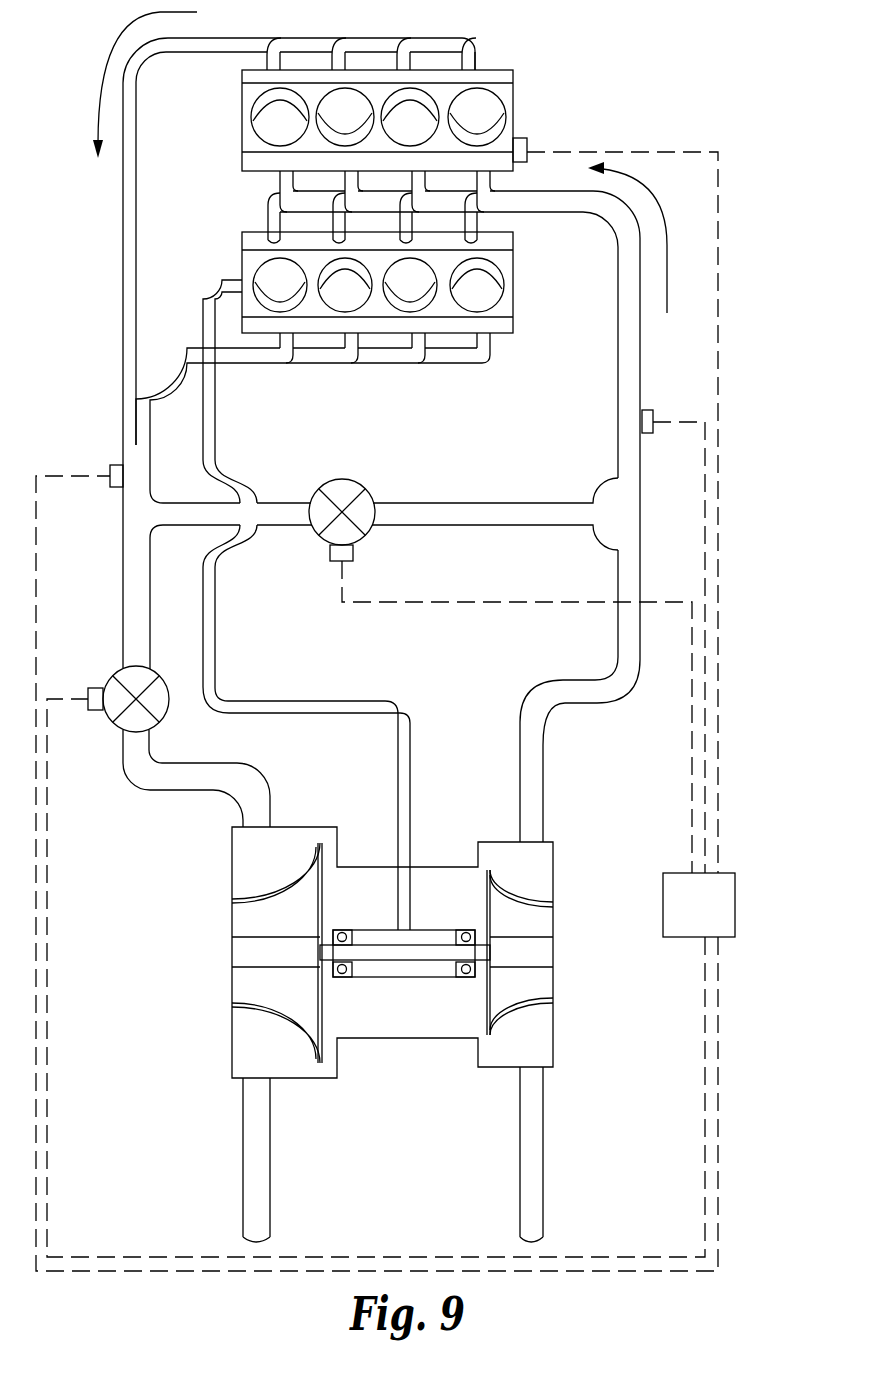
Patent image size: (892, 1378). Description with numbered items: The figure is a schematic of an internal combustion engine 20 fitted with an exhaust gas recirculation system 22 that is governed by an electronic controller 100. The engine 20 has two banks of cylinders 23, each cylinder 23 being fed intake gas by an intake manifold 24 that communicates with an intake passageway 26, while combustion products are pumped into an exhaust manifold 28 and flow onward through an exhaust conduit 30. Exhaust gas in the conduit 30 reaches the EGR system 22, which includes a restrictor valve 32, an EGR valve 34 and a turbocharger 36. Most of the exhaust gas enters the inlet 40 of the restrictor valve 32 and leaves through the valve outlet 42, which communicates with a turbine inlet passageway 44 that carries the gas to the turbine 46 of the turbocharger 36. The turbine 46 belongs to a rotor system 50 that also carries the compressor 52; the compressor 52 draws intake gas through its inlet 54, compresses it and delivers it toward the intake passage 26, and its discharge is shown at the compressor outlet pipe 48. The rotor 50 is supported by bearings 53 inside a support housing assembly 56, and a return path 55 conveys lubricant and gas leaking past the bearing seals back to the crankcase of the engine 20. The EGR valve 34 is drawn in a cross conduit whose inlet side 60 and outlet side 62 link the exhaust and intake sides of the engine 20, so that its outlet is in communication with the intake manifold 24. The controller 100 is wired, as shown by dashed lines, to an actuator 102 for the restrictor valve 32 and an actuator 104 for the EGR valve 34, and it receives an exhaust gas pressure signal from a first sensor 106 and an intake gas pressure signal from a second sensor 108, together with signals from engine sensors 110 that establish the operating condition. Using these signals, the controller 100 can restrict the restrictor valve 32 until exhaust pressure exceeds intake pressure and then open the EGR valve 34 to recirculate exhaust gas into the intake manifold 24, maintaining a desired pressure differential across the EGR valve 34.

The internal combustion engine 20 is at (745, 90).
The exhaust gas recirculation system 22 is at (387, 1090).
The cylinder 23 is at (475, 107).
The intake manifold 24 is at (508, 202).
The intake passageway 26 is at (547, 752).
The exhaust manifold 28 is at (463, 48).
The exhaust conduit 30 is at (128, 222).
The restrictor valve 32 is at (105, 683).
The EGR valve 34 is at (365, 480).
The turbocharger 36 is at (198, 991).
The inlet 40 is at (147, 668).
The valve outlet 42 is at (120, 733).
The turbine inlet passageway 44 is at (207, 790).
The turbine 46 is at (245, 917).
The compressor outlet pipe 48 is at (242, 1140).
The rotor system 50 is at (390, 943).
The compressor 52 is at (543, 990).
The bearings 53 is at (555, 840).
The inlet 54 is at (520, 1160).
The return path 55 is at (405, 700).
The support housing assembly 56 is at (418, 1038).
The valve inlet conduit 60 is at (307, 490).
The valve outlet conduit 62 is at (374, 525).
The controller 100 is at (687, 937).
The actuator 102 is at (88, 690).
The actuator 104 is at (330, 553).
The first sensor 106 is at (115, 465).
The second sensor 108 is at (652, 433).
The engine sensors 110 is at (522, 137).